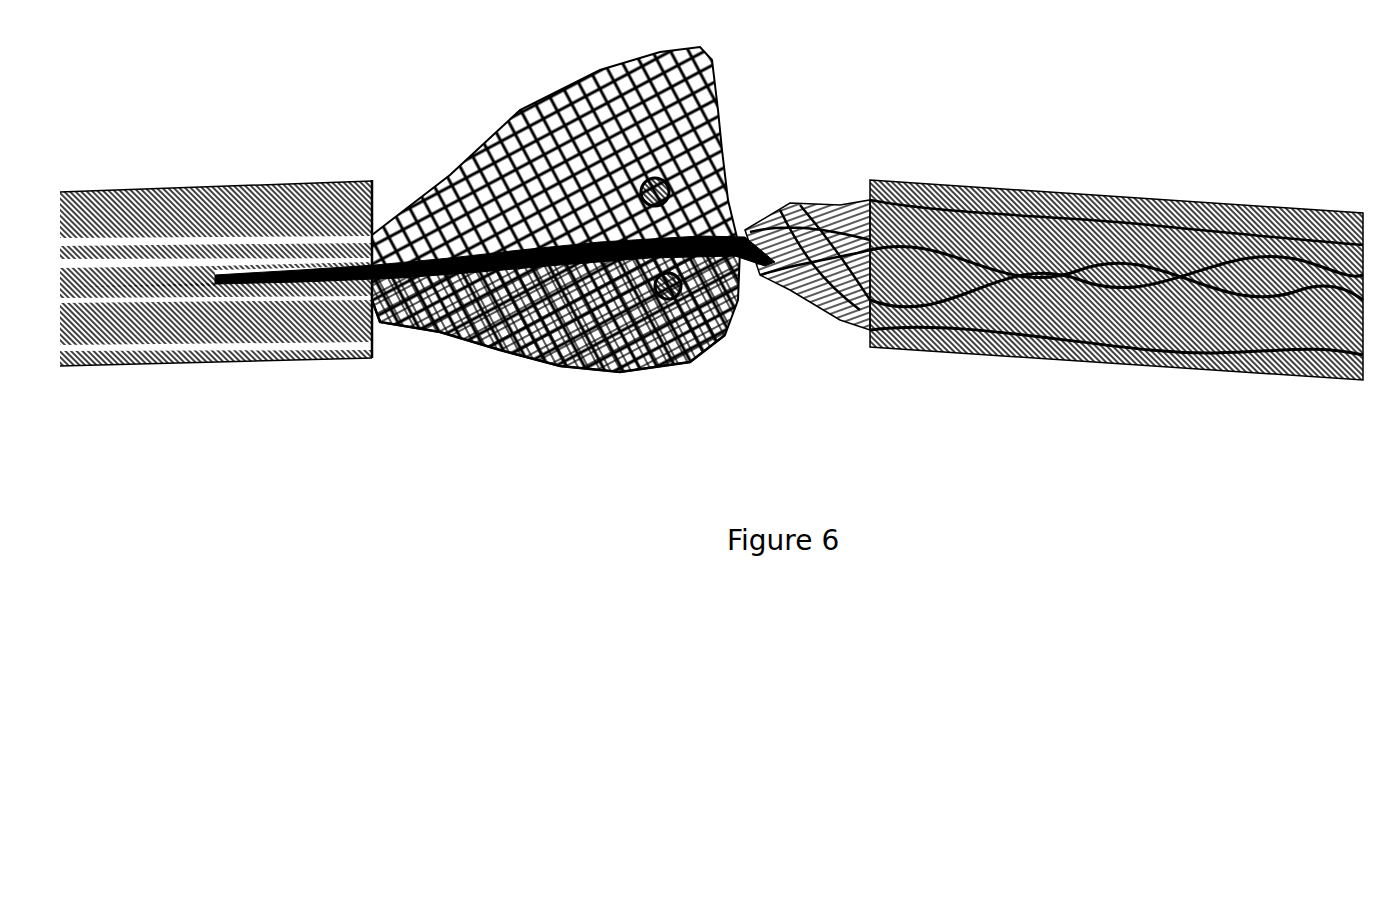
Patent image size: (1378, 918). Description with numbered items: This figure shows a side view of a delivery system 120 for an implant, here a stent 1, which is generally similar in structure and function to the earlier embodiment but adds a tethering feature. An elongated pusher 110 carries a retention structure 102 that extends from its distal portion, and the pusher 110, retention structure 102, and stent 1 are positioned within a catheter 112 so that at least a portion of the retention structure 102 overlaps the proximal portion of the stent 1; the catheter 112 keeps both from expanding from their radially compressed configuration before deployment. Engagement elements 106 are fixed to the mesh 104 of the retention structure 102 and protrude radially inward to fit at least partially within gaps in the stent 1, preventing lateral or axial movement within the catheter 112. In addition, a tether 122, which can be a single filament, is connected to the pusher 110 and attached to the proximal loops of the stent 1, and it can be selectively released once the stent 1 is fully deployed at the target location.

The stent 1 is at (840, 345).
The retention structure 102 is at (508, 114).
The mesh 104 is at (480, 332).
The engagement elements 106 is at (668, 186).
The elongated pusher 110 is at (147, 300).
The catheter 112 is at (125, 190).
The delivery system 120 is at (366, 121).
The tether 122 is at (735, 268).